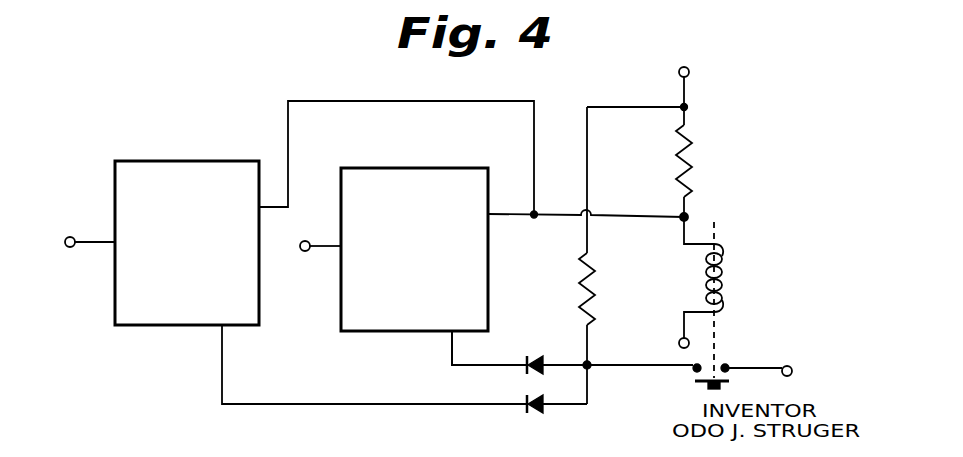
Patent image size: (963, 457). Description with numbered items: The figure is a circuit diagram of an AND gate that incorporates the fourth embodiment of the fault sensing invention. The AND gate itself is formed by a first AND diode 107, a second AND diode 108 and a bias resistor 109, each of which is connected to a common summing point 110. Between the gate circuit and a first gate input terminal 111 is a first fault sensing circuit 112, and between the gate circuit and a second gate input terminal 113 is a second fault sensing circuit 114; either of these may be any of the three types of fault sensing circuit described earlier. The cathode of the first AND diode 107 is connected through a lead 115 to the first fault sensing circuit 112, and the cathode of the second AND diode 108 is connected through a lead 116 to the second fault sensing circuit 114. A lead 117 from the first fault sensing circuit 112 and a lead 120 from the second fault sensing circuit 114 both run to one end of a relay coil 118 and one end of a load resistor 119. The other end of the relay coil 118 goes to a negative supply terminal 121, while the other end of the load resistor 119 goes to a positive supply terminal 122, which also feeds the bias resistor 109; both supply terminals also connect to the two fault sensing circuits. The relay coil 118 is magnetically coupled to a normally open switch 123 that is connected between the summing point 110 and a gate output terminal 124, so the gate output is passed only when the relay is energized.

The first AND diode 107 is at (537, 410).
The second AND diode 108 is at (536, 356).
The bias resistor 109 is at (594, 268).
The summing point 110 is at (588, 363).
The first gate input terminal 111 is at (75, 237).
The first fault sensing circuit 112 is at (201, 259).
The second gate input terminal 113 is at (306, 241).
The second fault sensing circuit 114 is at (436, 269).
The lead 115 is at (358, 405).
The lead 116 is at (452, 366).
The lead 117 is at (404, 102).
The relay coil 118 is at (723, 253).
The load resistor 119 is at (692, 156).
The lead 120 is at (505, 217).
The negative supply terminal 121 is at (679, 338).
The positive supply terminal 122 is at (689, 70).
The normally open switch 123 is at (694, 383).
The gate output terminal 124 is at (789, 366).